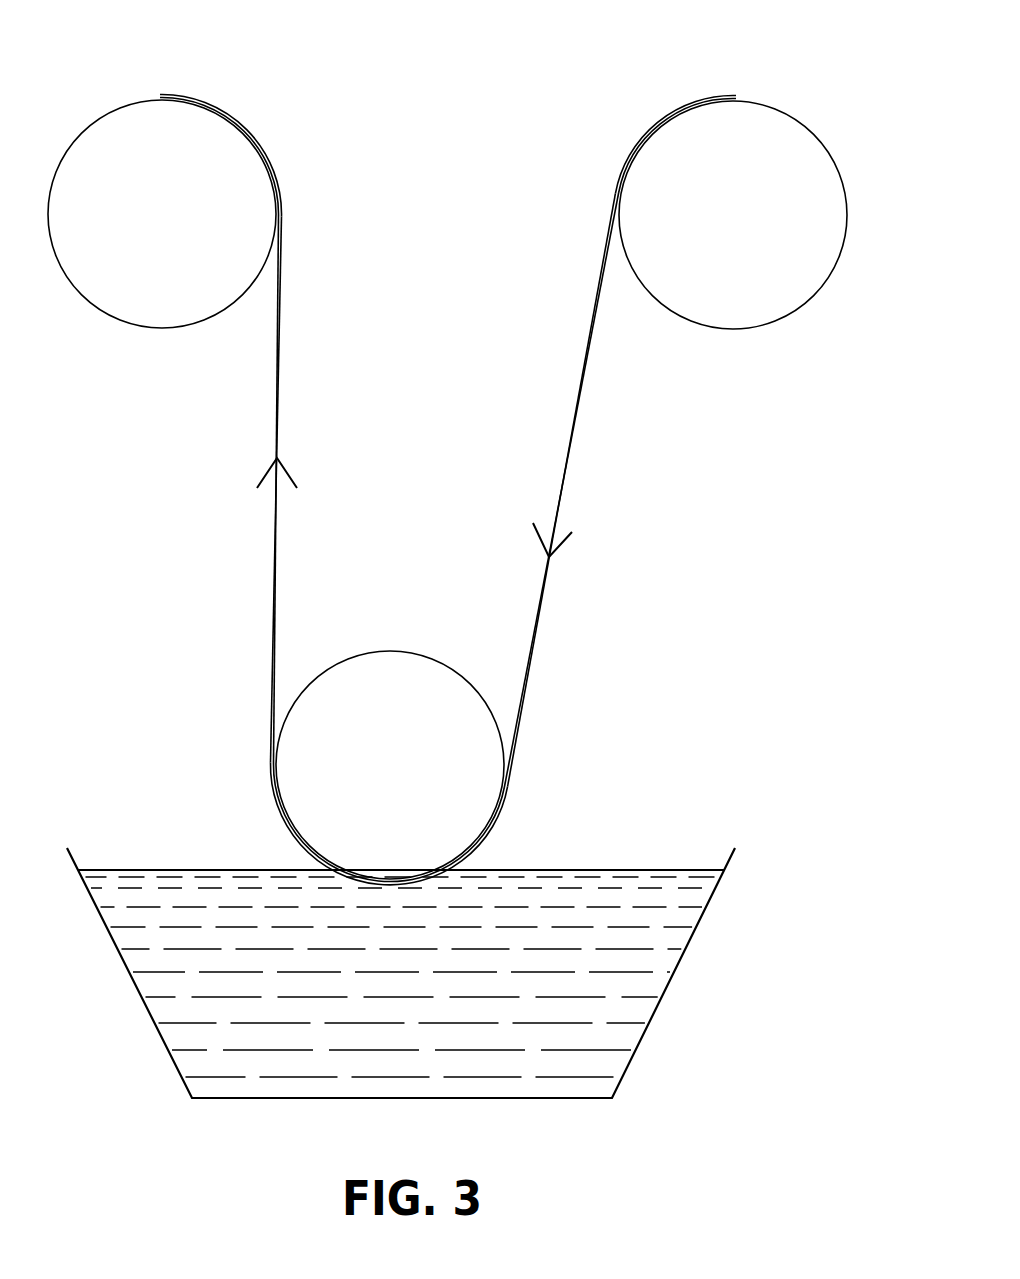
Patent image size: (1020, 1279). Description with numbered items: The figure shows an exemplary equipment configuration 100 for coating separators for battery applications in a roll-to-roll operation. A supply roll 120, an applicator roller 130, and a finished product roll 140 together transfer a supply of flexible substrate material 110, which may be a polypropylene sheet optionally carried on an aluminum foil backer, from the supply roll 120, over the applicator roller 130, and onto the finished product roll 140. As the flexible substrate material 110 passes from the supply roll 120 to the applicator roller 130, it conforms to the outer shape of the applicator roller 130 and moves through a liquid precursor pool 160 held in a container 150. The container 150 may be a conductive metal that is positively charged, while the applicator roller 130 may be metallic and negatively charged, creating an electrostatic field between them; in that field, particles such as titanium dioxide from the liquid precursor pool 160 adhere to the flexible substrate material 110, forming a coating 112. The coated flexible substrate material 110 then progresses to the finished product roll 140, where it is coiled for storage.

The equipment configuration 100 is at (548, 83).
The flexible substrate material 110 is at (448, 489).
The coating 112 is at (270, 620).
The supply roll 120 is at (760, 300).
The applicator roller 130 is at (292, 763).
The finished product roll 140 is at (142, 310).
The container 150 is at (692, 937).
The liquid precursor pool 160 is at (557, 880).